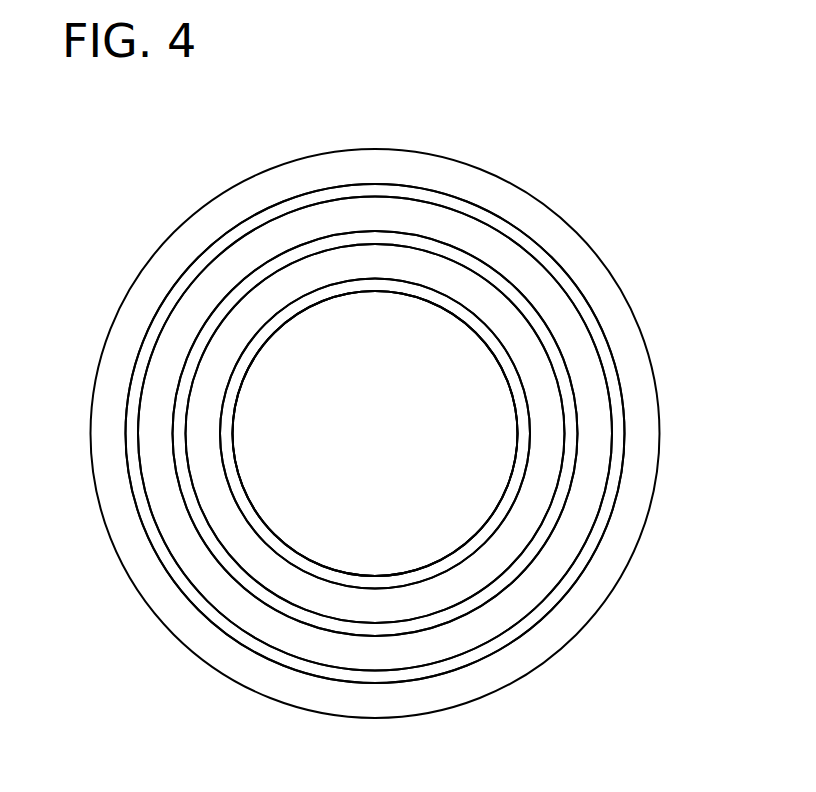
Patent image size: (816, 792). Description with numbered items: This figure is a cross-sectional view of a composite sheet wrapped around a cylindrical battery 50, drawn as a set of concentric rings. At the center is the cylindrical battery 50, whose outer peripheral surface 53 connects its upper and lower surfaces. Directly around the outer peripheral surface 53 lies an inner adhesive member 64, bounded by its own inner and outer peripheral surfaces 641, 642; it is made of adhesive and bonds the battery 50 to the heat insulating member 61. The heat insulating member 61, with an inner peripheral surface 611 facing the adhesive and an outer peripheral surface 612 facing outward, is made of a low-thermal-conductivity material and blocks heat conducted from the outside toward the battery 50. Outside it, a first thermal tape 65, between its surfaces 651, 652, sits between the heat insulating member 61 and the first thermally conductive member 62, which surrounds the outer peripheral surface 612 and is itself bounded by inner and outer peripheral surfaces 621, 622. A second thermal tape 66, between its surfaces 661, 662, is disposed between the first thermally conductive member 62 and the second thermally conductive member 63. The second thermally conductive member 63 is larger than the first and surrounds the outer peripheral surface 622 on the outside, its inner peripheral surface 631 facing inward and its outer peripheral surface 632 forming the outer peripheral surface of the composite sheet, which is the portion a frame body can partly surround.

The cylindrical battery 50 is at (360, 318).
The outer peripheral surface 53 is at (435, 302).
The heat insulating member 61 is at (447, 433).
The inner peripheral surface 611 is at (508, 348).
The outer peripheral surface 612 is at (565, 400).
The first thermally conductive member 62 is at (423, 434).
The inner surface of second layer 621 is at (580, 447).
The outer peripheral surface 622 is at (600, 507).
The second thermally conductive member 63 is at (389, 433).
The inner surface of third layer 631 is at (588, 567).
The outer peripheral surface 632 is at (587, 623).
The inner adhesive member 64 is at (336, 352).
The inner surface of first intermediate layer 641 is at (298, 310).
The outer surface of first intermediate layer 642 is at (275, 310).
The first thermal tape 65 is at (313, 433).
The inner surface of second intermediate layer 651 is at (210, 328).
The outer surface of second intermediate layer 652 is at (197, 347).
The second thermal tape 66 is at (330, 433).
The inner surface of third intermediate layer 661 is at (137, 412).
The outer surface of third intermediate layer 662 is at (125, 465).